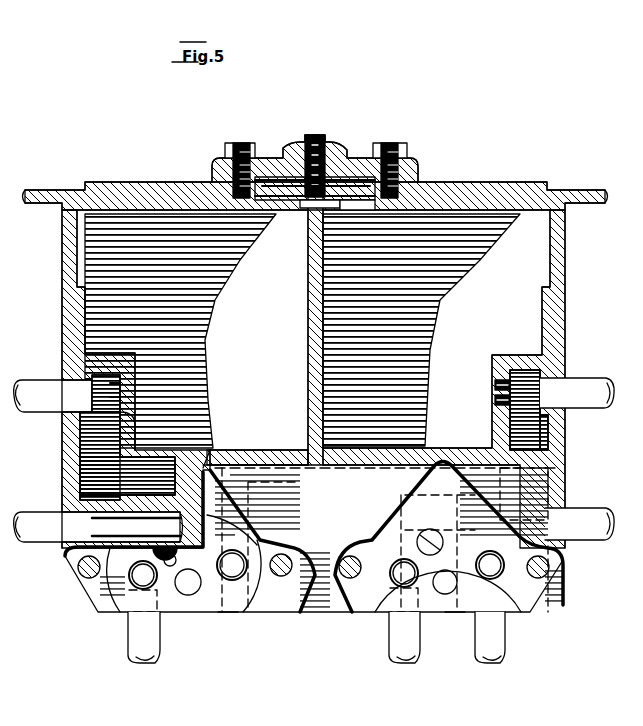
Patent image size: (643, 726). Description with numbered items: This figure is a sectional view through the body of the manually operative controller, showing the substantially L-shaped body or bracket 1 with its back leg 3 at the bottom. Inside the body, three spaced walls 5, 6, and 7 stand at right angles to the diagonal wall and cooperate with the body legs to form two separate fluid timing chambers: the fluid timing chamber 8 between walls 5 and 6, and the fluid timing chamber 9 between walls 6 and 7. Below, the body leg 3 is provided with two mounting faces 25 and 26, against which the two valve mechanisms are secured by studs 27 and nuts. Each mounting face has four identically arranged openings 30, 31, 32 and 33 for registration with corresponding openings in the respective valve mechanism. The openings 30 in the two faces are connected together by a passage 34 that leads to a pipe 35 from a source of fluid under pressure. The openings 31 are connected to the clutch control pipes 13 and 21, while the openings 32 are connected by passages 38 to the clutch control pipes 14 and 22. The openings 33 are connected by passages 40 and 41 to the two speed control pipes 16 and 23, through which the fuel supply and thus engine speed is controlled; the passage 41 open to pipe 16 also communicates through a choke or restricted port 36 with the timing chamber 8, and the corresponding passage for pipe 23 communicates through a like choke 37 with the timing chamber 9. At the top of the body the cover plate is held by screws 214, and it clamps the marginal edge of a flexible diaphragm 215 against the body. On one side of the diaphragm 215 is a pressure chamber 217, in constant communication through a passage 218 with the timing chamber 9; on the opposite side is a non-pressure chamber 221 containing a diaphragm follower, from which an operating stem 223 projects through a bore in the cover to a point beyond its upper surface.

The body 1 is at (58, 188).
The body leg 3 is at (446, 208).
The wall 5 is at (62, 263).
The wall 6 is at (308, 284).
The wall 7 is at (565, 284).
The fluid timing chamber 8 is at (156, 208).
The fluid timing chamber 9 is at (481, 208).
The clutch control pipe 13 is at (132, 638).
The clutch control pipe 14 is at (44, 510).
The speed control pipe 16 is at (44, 380).
The clutch control pipe 21 is at (398, 638).
The clutch control pipe 22 is at (588, 538).
The speed control pipe 23 is at (592, 380).
The mounting face 25 is at (229, 613).
The mounting face 26 is at (455, 613).
The stud 27 is at (78, 569).
The opening 30 is at (233, 570).
The opening 31 is at (140, 577).
The opening 32 is at (170, 565).
The opening 33 is at (192, 586).
The passage 34 is at (292, 452).
The pipe 35 is at (500, 638).
The choke 36 is at (92, 392).
The choke 37 is at (497, 386).
The passage 38 is at (545, 516).
The passage 40 is at (222, 492).
The passage 41 is at (86, 432).
The screw 214 is at (230, 150).
The flexible diaphragm 215 is at (358, 208).
The pressure chamber 217 is at (330, 212).
The passage 218 is at (376, 212).
The non-pressure chamber 221 is at (283, 160).
The operating stem 223 is at (322, 172).